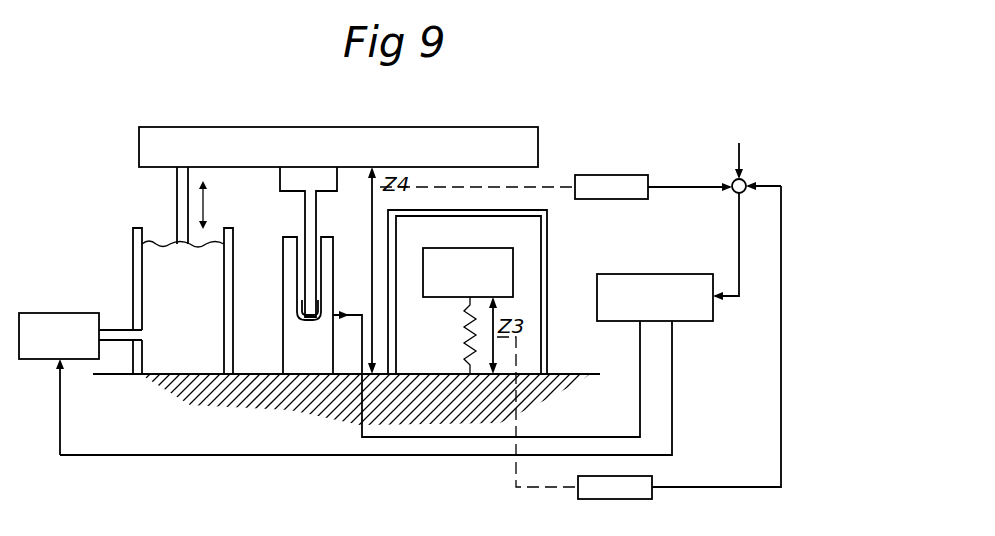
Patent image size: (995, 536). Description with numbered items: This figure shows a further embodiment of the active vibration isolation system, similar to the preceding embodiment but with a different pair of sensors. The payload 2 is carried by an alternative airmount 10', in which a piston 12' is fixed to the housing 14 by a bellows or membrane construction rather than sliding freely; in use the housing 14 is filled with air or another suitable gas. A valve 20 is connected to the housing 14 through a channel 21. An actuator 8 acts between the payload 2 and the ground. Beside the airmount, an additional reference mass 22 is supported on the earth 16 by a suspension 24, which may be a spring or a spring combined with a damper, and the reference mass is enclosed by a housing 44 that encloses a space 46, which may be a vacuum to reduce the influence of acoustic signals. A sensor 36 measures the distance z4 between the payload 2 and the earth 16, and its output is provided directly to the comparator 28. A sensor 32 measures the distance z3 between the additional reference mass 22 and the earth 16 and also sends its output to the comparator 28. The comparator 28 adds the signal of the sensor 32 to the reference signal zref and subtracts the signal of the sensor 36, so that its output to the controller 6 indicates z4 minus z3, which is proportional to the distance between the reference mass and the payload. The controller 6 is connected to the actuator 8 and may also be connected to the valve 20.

The payload 2 is at (282, 131).
The alternative airmount 10' is at (275, 241).
The actuator 8 is at (290, 223).
The piston 12' is at (183, 267).
The housing 14 is at (205, 324).
The channel 21 is at (120, 300).
The valve 20 is at (28, 359).
The additional reference mass 22 is at (471, 268).
The suspension 24 is at (469, 335).
The earth 16 is at (553, 390).
The housing 44 is at (548, 225).
The space 46 is at (512, 307).
The sensor 36 is at (618, 175).
The comparator 28 is at (731, 182).
The controller 6 is at (692, 283).
The sensor 32 is at (630, 499).